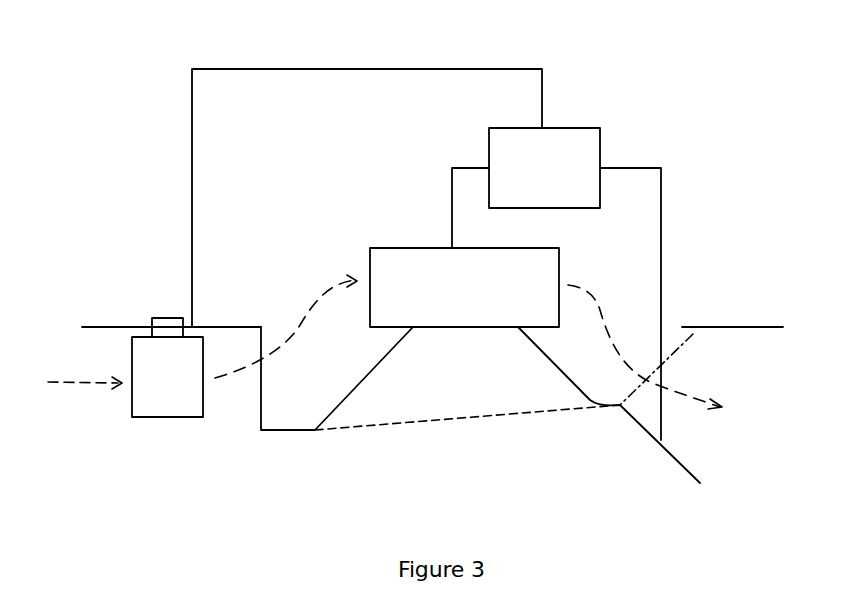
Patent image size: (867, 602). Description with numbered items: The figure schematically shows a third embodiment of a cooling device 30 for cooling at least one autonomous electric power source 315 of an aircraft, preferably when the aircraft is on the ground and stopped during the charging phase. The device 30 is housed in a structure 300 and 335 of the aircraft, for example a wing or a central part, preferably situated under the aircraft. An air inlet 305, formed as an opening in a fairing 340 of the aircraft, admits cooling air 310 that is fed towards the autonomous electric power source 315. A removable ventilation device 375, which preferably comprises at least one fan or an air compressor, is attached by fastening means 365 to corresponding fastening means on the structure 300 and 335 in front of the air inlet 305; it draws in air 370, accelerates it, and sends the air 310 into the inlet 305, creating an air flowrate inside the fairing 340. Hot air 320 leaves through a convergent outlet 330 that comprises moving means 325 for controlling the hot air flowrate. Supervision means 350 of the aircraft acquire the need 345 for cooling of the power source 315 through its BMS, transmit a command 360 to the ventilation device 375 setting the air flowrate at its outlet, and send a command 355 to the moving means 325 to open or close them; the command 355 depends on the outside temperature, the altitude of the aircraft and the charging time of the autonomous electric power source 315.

The cooling device 30 is at (165, 78).
The aircraft structure 300 is at (102, 327).
The air inlet 305 is at (260, 398).
The cooling air 310 is at (297, 330).
The autonomous electric power source 315 is at (432, 267).
The hot air 320 is at (590, 290).
The moving means for controlling air flowrate 325 is at (648, 433).
The convergent hot air outlet 330 is at (672, 350).
The aircraft structure 335 is at (733, 327).
The fairing 340 is at (477, 420).
The need for cooling 345 is at (472, 167).
The supervision means 350 is at (573, 165).
The command 355 is at (633, 166).
The command 360 is at (333, 70).
The fastening means 365 is at (167, 320).
The drawn-in air 370 is at (100, 387).
The removable ventilation device 375 is at (156, 401).